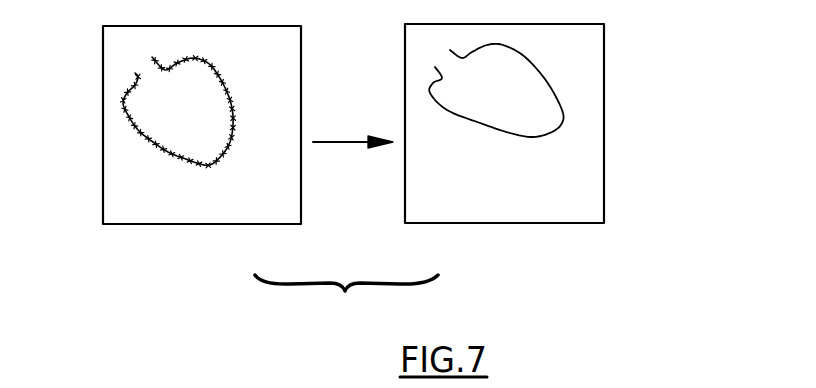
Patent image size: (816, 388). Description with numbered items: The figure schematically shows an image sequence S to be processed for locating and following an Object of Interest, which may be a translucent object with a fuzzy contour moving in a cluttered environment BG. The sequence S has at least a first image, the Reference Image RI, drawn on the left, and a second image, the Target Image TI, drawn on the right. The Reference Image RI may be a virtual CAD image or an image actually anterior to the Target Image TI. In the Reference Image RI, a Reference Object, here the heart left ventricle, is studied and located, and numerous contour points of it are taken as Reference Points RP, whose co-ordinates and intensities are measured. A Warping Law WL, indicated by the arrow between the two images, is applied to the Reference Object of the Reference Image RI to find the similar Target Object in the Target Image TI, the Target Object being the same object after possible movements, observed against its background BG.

The Reference Points RP is at (170, 152).
The Reference Image RI is at (197, 239).
The cluttered environment BG is at (284, 205).
The Warping Law WL is at (353, 126).
The image sequence S is at (346, 301).
The Target Image TI is at (540, 234).